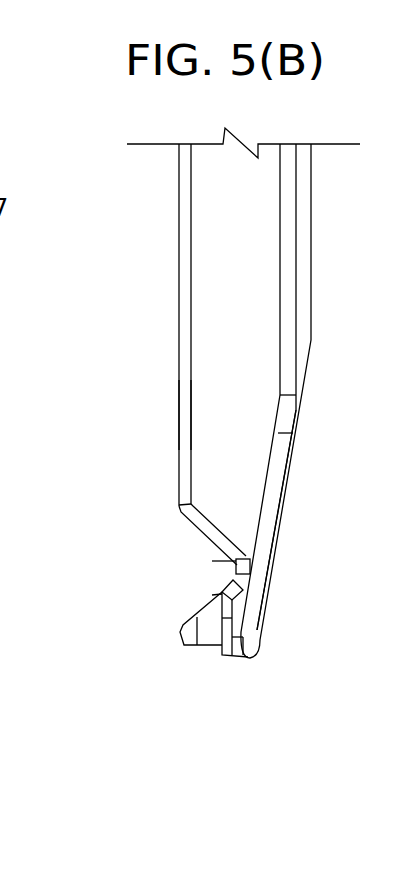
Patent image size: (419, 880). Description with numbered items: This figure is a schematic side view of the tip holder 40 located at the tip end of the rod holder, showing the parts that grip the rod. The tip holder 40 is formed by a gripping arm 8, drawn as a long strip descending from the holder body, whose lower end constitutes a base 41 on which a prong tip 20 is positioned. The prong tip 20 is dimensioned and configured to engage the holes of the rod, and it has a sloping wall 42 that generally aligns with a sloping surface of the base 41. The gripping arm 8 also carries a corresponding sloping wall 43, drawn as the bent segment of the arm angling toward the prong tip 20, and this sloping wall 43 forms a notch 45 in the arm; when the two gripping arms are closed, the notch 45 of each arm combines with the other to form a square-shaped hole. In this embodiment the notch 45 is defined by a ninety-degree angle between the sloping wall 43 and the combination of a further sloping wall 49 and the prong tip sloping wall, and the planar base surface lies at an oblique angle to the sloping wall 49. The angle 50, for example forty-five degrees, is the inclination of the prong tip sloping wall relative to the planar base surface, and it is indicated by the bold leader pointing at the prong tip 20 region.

The tip holder 40 is at (179, 295).
The gripping arm 8 is at (213, 415).
The sloping wall 43 is at (197, 523).
The sloping wall 49 is at (212, 561).
The base 41 is at (253, 618).
The notch 45 is at (257, 558).
The prong tip 20 is at (183, 650).
The sloping wall 42 is at (200, 607).
The angle 50 is at (222, 595).